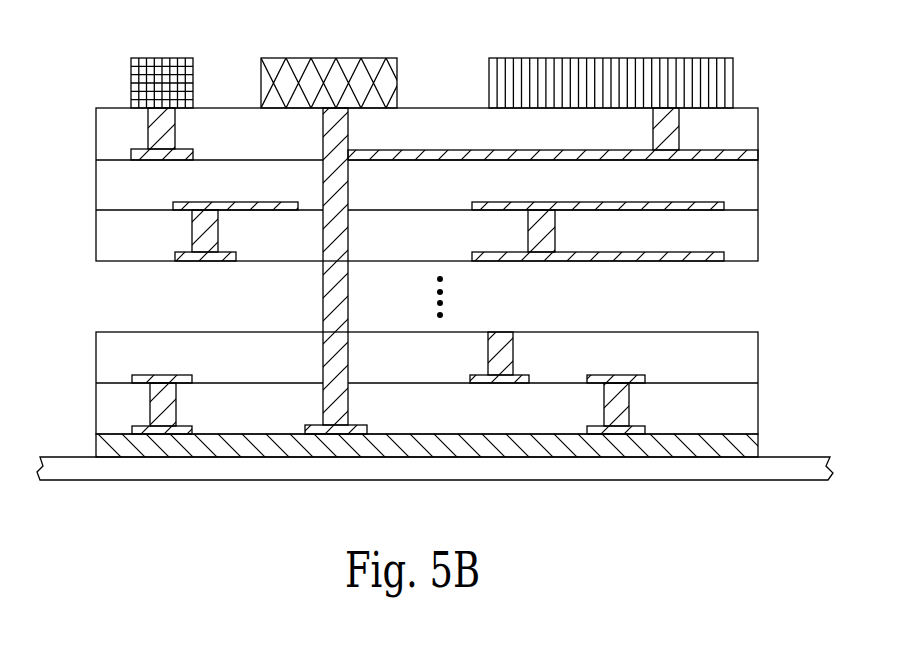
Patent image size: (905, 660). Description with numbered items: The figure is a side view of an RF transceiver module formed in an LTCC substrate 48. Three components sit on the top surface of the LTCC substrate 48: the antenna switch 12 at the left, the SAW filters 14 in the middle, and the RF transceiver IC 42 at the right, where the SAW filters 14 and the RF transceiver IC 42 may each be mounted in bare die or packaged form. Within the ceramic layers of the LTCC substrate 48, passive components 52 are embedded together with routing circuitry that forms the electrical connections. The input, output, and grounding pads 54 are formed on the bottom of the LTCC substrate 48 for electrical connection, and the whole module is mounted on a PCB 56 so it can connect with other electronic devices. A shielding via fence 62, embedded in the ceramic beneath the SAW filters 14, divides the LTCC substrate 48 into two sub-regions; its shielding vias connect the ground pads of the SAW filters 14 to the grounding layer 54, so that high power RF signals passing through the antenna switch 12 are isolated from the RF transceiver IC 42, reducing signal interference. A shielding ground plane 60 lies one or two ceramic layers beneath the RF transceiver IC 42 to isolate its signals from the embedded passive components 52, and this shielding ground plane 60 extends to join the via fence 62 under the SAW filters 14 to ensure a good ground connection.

The antenna switch 12 is at (150, 57).
The SAW filters 14 is at (377, 57).
The RF transceiver IC 42 is at (680, 57).
The LTCC substrate 48 is at (89, 108).
The passive components 52 is at (182, 283).
The input, output, and grounding pads 54 is at (742, 447).
The PCB 56 is at (97, 468).
The shielding ground plane 60 is at (723, 150).
The shielding via fence 62 is at (353, 460).